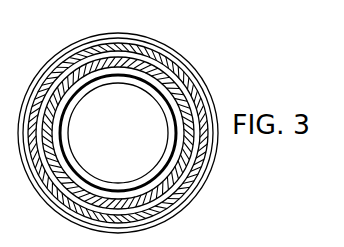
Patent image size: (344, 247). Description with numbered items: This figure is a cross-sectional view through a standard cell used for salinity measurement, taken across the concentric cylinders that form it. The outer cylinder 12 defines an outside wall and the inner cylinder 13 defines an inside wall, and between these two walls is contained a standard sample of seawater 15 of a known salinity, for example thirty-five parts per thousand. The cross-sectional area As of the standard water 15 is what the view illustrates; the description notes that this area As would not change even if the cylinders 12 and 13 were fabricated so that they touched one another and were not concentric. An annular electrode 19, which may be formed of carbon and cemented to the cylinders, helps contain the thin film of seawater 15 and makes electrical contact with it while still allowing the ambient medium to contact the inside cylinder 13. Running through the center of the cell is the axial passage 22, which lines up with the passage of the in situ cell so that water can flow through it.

The second electrode 19 is at (195, 70).
The cylinder 12 is at (197, 104).
The cylinder 13 is at (176, 97).
The cross-sectional area As is at (203, 166).
The standard sample of seawater 15 is at (175, 191).
The axial passage 22 is at (128, 160).